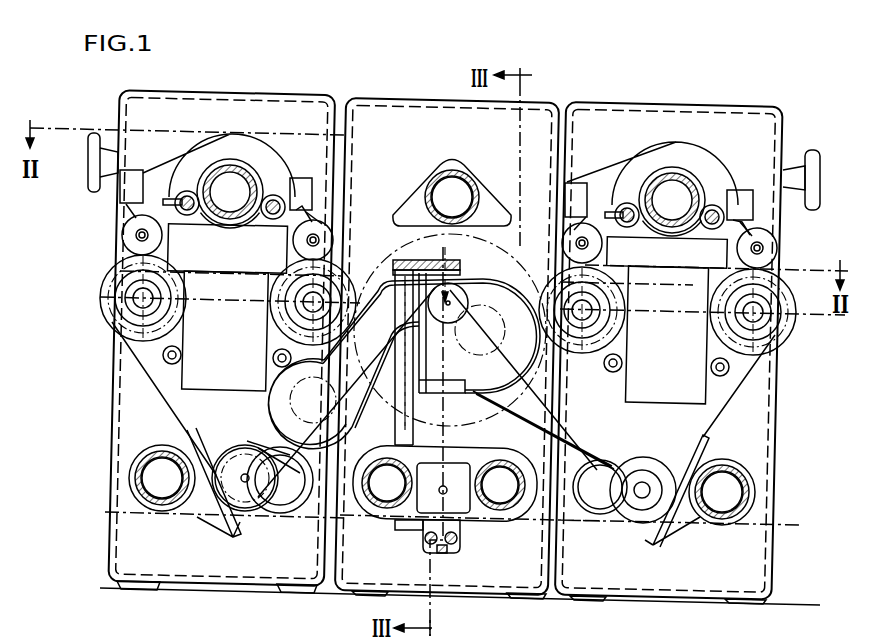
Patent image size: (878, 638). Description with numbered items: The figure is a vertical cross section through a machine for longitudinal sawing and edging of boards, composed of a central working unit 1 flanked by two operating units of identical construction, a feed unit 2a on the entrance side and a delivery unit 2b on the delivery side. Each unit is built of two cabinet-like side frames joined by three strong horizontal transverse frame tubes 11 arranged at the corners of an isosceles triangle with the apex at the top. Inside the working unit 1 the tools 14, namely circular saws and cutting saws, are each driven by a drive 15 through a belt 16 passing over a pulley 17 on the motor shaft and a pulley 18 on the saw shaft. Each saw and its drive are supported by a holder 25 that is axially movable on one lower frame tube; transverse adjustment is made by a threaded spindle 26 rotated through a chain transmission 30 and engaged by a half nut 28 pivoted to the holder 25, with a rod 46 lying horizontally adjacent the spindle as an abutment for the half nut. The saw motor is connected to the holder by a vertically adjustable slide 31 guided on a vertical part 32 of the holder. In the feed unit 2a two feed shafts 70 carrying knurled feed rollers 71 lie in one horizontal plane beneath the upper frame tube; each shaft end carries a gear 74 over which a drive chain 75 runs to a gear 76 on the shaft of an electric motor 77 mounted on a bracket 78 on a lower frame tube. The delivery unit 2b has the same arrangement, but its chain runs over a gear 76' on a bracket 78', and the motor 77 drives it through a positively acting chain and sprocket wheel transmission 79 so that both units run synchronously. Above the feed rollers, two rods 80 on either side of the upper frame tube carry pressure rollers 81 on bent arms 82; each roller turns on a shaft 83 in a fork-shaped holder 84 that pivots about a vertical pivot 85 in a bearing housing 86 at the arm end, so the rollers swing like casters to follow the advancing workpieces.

The working unit 1 is at (397, 110).
The feed unit 2a is at (233, 108).
The delivery unit 2b is at (620, 117).
The frame tubes 11 is at (441, 172).
The tools 14 is at (513, 274).
The drive 15 is at (283, 387).
The belt 16 is at (357, 384).
The pulley 17 is at (490, 328).
The pulley 18 is at (445, 264).
The holder 25 is at (386, 515).
The threaded spindle 26 is at (420, 527).
The half nut 28 is at (440, 553).
The chain transmission 30 is at (453, 550).
The slide 31 is at (421, 357).
The vertical part 32 is at (399, 418).
The rod 46 is at (450, 537).
The feed shafts 70 is at (300, 308).
The feed rollers 71 is at (270, 299).
The gear 74 is at (335, 270).
The drive chain 75 is at (162, 390).
The gear 76 is at (256, 497).
The gear 76' is at (624, 513).
The electric motor 77 is at (280, 500).
The bracket 78 is at (185, 490).
The bracket 78' is at (700, 502).
The chain and sprocket wheel transmission 79 is at (360, 517).
The rods 80 is at (265, 218).
The pressure rollers 81 is at (160, 240).
The bent arms 82 is at (155, 176).
The shafts 83 is at (325, 228).
The fork-shaped holders 84 is at (315, 222).
The pivots 85 is at (292, 181).
The bearing housings 86 is at (300, 205).